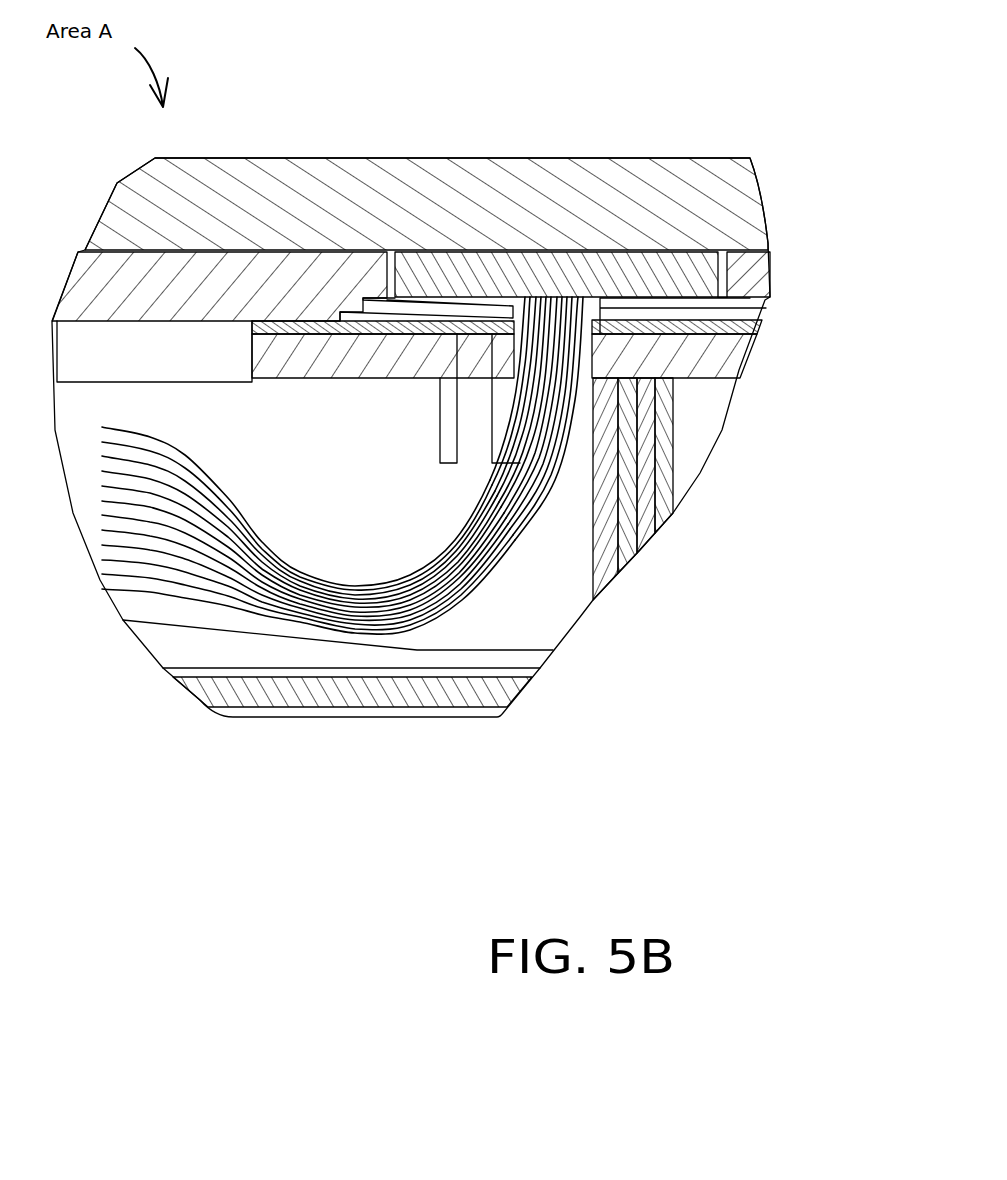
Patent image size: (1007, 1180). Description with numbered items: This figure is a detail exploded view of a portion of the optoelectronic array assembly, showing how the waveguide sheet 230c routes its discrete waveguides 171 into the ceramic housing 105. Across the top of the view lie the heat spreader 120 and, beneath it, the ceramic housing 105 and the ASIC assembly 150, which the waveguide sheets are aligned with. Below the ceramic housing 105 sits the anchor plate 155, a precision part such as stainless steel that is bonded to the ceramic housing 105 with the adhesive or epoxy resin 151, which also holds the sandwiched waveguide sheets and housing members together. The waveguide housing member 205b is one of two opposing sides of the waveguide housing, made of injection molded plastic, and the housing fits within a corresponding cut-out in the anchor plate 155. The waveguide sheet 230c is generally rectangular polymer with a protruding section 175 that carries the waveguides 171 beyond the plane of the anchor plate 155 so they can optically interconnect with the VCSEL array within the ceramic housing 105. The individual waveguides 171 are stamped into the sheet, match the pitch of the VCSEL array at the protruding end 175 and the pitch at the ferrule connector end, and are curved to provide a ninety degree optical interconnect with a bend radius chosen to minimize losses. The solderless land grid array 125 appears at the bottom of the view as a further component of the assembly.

The ceramic housing 105 is at (762, 292).
The heat spreader 120 is at (755, 200).
The solderless land grid array (LGA) 125 is at (510, 690).
The ASIC assembly 150 is at (668, 267).
The adhesive 151 is at (758, 325).
The anchor plate 155 is at (717, 352).
The waveguides 171 is at (183, 457).
The protruding section 175 is at (585, 333).
The waveguide housing member 205b is at (610, 458).
The waveguide sheet 230c is at (180, 613).